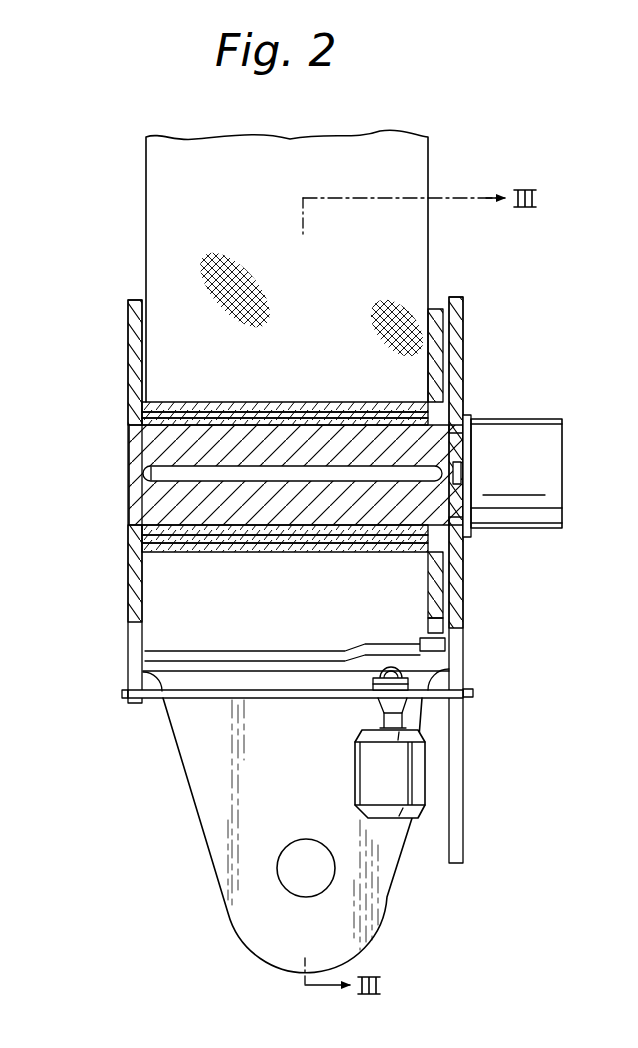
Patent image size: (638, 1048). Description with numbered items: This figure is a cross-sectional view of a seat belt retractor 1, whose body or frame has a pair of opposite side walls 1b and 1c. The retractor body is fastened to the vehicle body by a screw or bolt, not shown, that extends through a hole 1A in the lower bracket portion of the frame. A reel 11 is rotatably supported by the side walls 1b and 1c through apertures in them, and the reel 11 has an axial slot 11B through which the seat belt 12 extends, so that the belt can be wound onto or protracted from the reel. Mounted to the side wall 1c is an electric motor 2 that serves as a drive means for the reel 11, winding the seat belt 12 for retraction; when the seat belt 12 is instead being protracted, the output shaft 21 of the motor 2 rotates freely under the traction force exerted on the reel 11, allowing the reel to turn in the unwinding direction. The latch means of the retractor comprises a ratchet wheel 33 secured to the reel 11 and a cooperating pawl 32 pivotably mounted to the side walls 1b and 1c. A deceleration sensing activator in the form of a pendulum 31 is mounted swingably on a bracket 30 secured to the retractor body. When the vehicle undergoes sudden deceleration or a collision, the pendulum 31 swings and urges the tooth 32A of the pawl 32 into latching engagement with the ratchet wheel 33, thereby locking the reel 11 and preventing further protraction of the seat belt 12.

The retractor 1 is at (94, 388).
The hole 1A is at (335, 868).
The side wall 1b is at (134, 343).
The side wall 1c is at (457, 341).
The electric motor 2 is at (556, 470).
The reel 11 is at (138, 509).
The axial slot 11B is at (145, 477).
The seat belt 12 is at (166, 226).
The output shaft 21 is at (458, 462).
The bracket 30 is at (153, 694).
The pendulum 31 is at (403, 808).
The pawl 32 is at (366, 658).
The tooth 32A is at (447, 644).
The ratchet wheel 33 is at (440, 566).